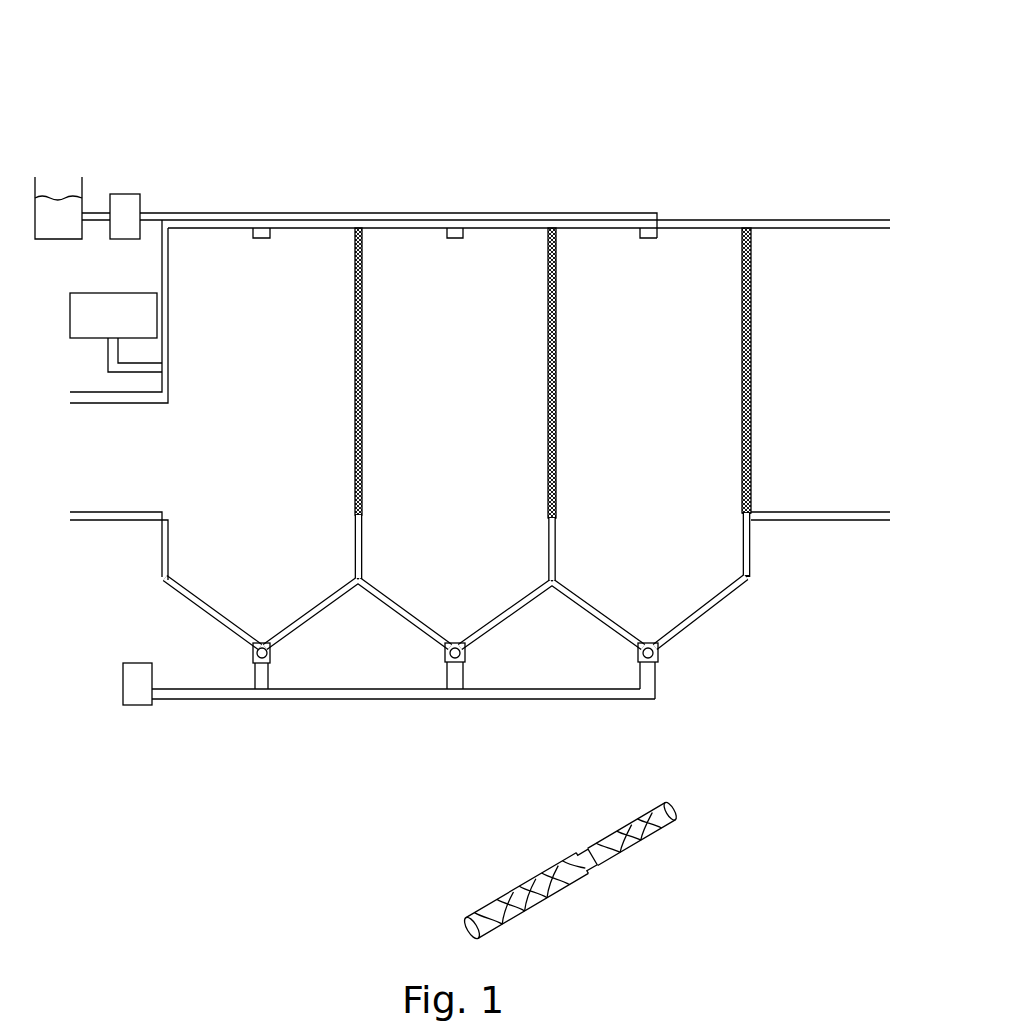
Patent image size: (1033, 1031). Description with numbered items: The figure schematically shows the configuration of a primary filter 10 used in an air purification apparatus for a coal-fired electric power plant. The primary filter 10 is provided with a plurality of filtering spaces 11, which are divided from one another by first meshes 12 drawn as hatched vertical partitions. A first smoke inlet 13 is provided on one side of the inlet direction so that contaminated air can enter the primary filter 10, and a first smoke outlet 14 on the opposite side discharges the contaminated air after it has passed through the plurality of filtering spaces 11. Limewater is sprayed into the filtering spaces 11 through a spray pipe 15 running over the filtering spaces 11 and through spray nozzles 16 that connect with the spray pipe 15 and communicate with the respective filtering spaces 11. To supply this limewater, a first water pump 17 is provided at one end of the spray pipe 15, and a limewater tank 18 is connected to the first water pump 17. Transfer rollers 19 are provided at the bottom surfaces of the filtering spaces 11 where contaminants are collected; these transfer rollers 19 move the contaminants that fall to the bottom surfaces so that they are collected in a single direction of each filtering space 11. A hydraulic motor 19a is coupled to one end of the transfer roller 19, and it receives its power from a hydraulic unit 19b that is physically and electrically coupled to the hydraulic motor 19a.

The primary filter 10 is at (643, 168).
The filtering spaces 11 is at (602, 253).
The first meshes 12 is at (355, 358).
The first smoke inlet 13 is at (96, 460).
The first smoke outlet 14 is at (831, 402).
The spray pipe 15 is at (276, 212).
The spray nozzles 16 is at (262, 238).
The first water pump 17 is at (115, 194).
The limewater tank 18 is at (35, 183).
The transfer rollers 19 is at (658, 657).
The hydraulic motor 19a is at (445, 658).
The hydraulic unit 19b is at (140, 705).